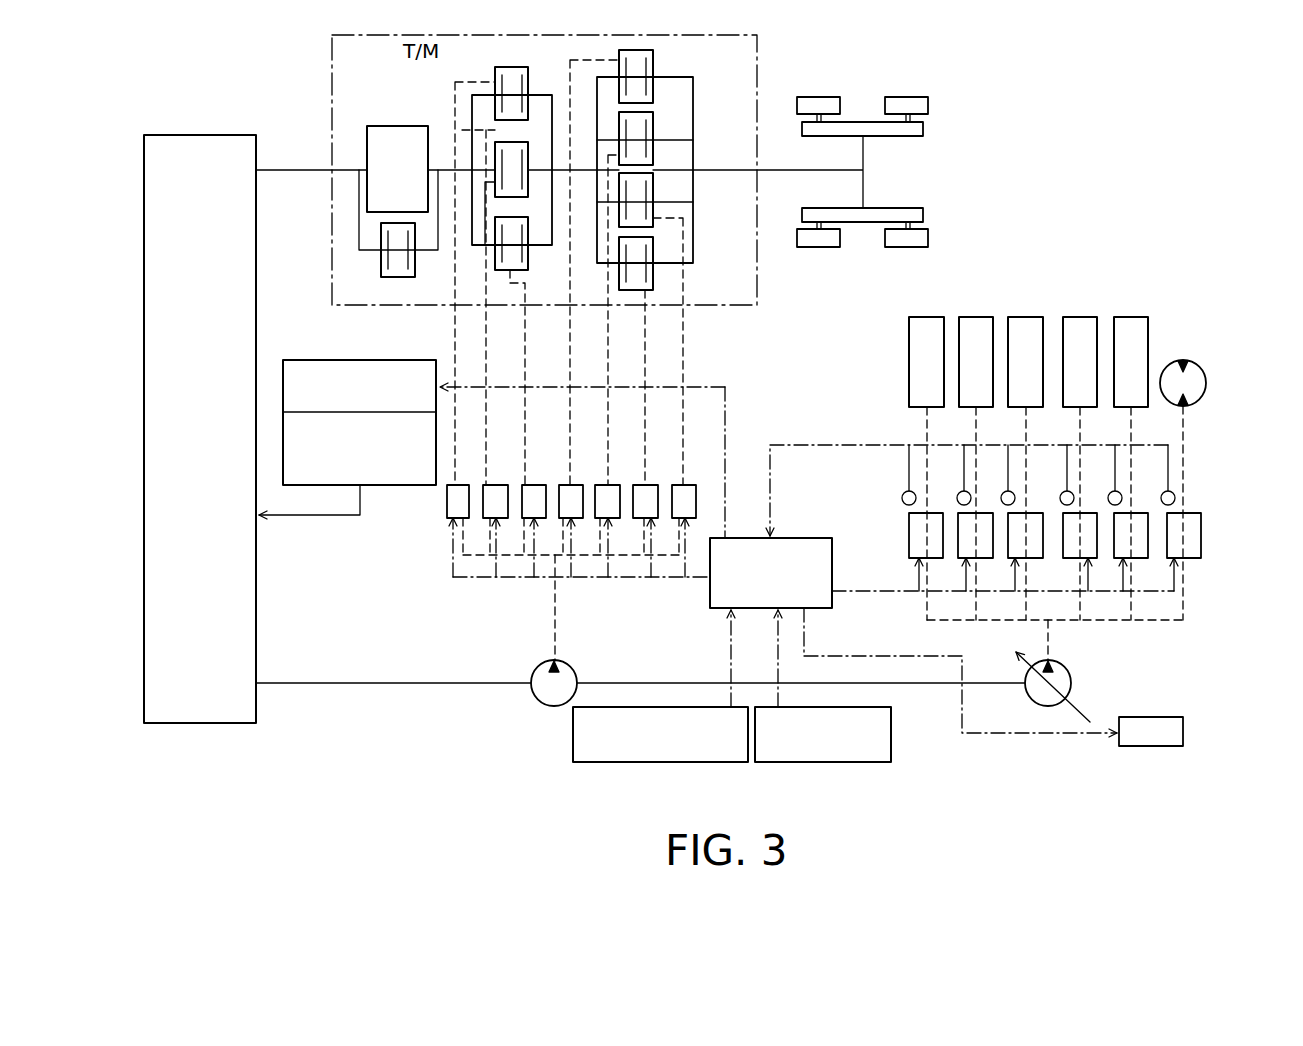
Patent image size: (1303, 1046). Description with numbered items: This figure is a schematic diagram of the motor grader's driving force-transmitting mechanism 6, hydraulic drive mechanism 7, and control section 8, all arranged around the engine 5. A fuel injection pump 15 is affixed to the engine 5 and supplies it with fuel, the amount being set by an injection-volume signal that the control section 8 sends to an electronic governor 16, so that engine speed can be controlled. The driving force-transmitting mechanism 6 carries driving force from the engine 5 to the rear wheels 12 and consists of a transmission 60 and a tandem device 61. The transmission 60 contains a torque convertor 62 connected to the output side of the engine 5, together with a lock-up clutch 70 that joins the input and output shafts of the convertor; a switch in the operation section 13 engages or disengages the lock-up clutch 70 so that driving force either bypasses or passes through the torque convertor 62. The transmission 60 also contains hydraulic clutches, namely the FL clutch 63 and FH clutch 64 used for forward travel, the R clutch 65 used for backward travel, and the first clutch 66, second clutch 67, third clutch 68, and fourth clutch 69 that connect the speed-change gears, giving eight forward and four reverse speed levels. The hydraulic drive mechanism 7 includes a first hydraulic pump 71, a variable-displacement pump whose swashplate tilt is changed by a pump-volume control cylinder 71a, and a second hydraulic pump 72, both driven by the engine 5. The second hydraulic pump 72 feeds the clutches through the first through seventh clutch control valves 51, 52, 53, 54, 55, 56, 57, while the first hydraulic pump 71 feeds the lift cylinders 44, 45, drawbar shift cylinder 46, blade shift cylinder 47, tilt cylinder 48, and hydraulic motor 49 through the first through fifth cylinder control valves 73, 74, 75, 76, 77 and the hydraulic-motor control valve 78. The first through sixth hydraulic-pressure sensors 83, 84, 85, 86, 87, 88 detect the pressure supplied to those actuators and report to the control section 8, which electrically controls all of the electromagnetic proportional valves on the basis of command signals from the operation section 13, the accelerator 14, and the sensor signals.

The engine 5 is at (210, 134).
The driving force-transmitting mechanism 6 is at (978, 98).
The hydraulic drive mechanism 7 is at (1182, 663).
The control section 8 is at (718, 610).
The rear wheels 12 is at (815, 97).
The operation section 13 is at (893, 735).
The accelerator 14 is at (572, 735).
The fuel injection pump 15 is at (378, 487).
The electronic governor 16 is at (347, 360).
The lift cylinder 44 is at (932, 317).
The lift cylinder 45 is at (977, 317).
The drawbar shift cylinder 46 is at (1025, 317).
The blade shift cylinder 47 is at (1087, 317).
The tilt cylinder 48 is at (1138, 317).
The hydraulic motor 49 is at (1183, 361).
The first clutch control valve 51 is at (446, 505).
The second clutch control valve 52 is at (503, 485).
The third clutch control valve 53 is at (541, 485).
The fourth clutch control valve 54 is at (580, 485).
The fifth clutch control valve 55 is at (616, 485).
The sixth clutch control valve 56 is at (654, 485).
The seventh clutch control valve 57 is at (690, 485).
The transmission 60 is at (721, 306).
The tandem device 61 is at (924, 129).
The torque convertor 62 is at (378, 126).
The FL clutch 63 is at (510, 66).
The FH clutch 64 is at (462, 130).
The R clutch 65 is at (527, 286).
The first clutch 66 is at (656, 62).
The second clutch 67 is at (656, 128).
The third clutch 68 is at (656, 197).
The fourth clutch 69 is at (656, 285).
The lock-up clutch 70 is at (393, 278).
The first hydraulic pump 71 is at (1072, 683).
The pump-volume control cylinder 71a is at (1183, 735).
The second hydraulic pump 72 is at (537, 697).
The first cylinder control valve 73 is at (914, 548).
The second cylinder control valve 74 is at (963, 548).
The third cylinder control valve 75 is at (1013, 548).
The fourth cylinder control valve 76 is at (1068, 548).
The fifth cylinder control valve 77 is at (1119, 548).
The hydraulic-motor control valve 78 is at (1172, 548).
The first hydraulic-pressure sensor 83 is at (903, 505).
The second hydraulic-pressure sensor 84 is at (957, 500).
The third hydraulic-pressure sensor 85 is at (1001, 501).
The fourth hydraulic-pressure sensor 86 is at (1060, 501).
The fifth hydraulic-pressure sensor 87 is at (1108, 501).
The sixth hydraulic-pressure sensor 88 is at (1161, 501).